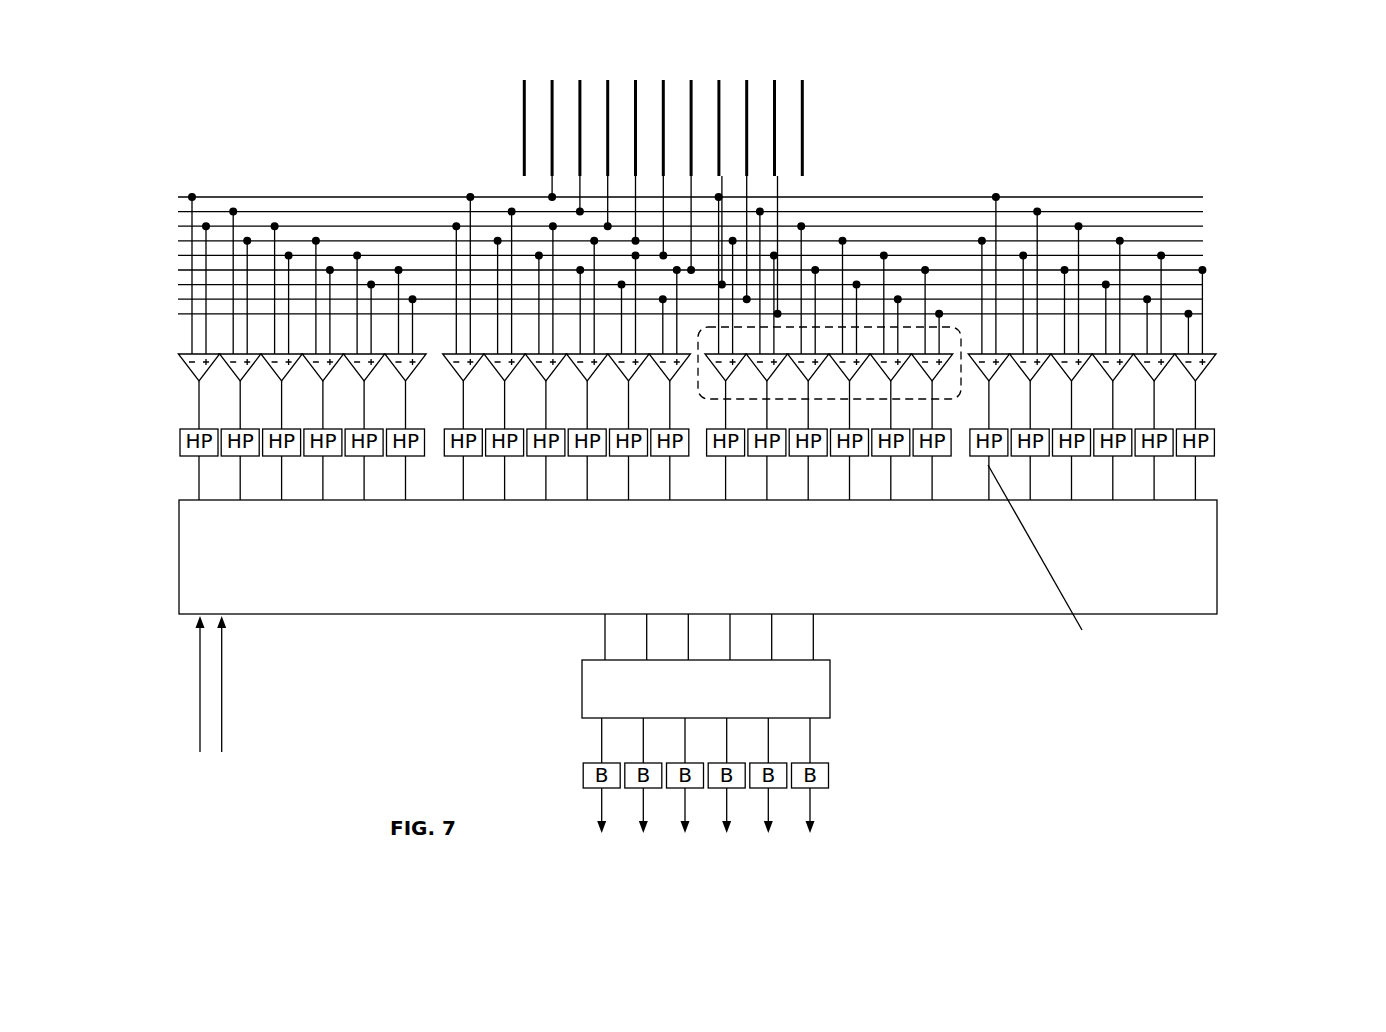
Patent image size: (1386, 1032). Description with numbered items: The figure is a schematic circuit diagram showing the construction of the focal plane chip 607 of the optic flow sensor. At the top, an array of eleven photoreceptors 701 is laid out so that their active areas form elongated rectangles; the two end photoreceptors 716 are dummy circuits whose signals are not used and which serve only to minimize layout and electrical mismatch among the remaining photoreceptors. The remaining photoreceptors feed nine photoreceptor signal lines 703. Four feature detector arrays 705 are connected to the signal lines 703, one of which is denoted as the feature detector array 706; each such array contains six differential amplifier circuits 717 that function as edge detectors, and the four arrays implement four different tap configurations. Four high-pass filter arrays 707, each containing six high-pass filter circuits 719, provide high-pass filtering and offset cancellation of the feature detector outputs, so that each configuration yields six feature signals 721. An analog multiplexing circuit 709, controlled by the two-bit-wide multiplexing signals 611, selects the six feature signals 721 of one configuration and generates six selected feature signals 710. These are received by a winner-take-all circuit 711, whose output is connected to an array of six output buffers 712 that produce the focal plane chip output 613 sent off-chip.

The focal plane chip 607 is at (335, 68).
The photoreceptors 701 is at (808, 105).
The end photoreceptors 716 is at (521, 128).
The photoreceptor signal lines 703 is at (1140, 173).
The feature detector arrays 705 is at (945, 172).
The feature detector array 706 is at (953, 392).
The differential amplifier circuits 717 is at (1187, 376).
The high-pass filter arrays 707 is at (1220, 442).
The high-pass filter circuits 719 is at (233, 428).
The feature signals 721 is at (242, 487).
The analog multiplexing circuit 709 is at (985, 603).
The multiplexing signals 611 is at (290, 717).
The selected feature signals 710 is at (831, 633).
The winner-take-all circuit 711 is at (582, 693).
The output buffers 712 is at (855, 782).
The focal plane chip output 613 is at (848, 822).